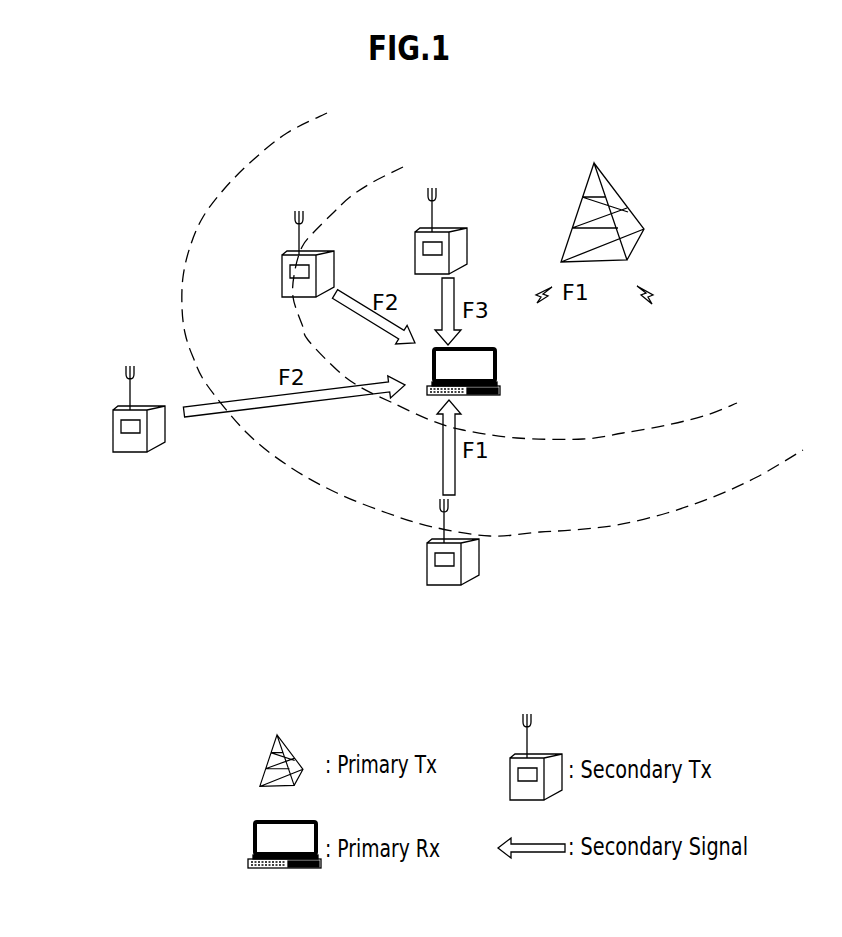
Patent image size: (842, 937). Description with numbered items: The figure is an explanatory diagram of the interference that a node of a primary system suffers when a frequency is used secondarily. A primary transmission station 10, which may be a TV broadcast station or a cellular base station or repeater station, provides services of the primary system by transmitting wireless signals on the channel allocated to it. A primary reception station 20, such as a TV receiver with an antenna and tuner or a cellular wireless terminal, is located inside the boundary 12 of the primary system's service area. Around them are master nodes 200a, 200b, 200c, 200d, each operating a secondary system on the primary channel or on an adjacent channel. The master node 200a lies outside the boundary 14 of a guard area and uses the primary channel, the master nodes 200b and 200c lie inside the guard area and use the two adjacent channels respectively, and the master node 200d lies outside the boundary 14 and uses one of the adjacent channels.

The primary transmission station 10 is at (608, 183).
The boundary of service area 12 is at (625, 435).
The boundary of guard area 14 is at (638, 522).
The primary reception station 20 is at (500, 380).
The master node 200a is at (462, 541).
The master node 200b is at (297, 217).
The master node 200c is at (434, 198).
The master node 200d is at (115, 409).